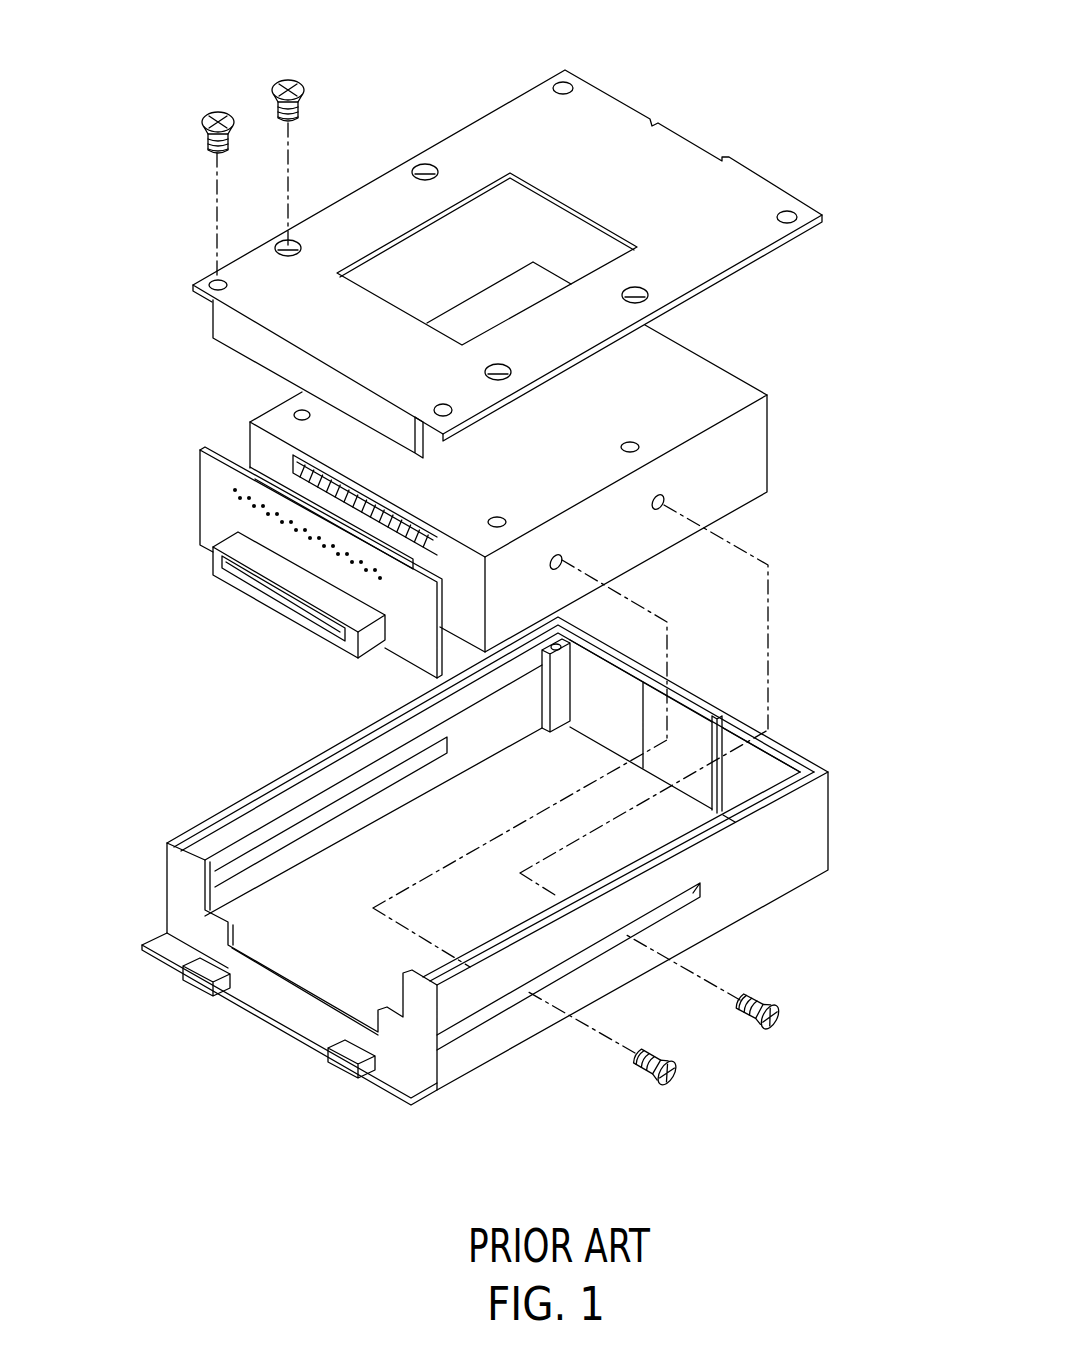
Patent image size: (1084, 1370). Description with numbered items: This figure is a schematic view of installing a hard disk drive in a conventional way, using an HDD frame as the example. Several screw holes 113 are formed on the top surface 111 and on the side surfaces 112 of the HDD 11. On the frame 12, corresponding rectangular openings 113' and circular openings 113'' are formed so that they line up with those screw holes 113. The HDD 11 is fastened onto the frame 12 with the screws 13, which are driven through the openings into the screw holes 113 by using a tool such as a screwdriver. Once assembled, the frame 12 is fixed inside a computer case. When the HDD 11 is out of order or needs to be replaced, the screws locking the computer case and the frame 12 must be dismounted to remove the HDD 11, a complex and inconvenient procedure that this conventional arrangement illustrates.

The HDD 11 is at (562, 486).
The top surface 111 is at (700, 388).
The side surfaces 112 is at (743, 460).
The screw holes 113 is at (722, 506).
The rectangular openings 113' is at (681, 966).
The circular openings 113'' is at (170, 232).
The frame 12 is at (534, 861).
The screws 13 is at (308, 108).